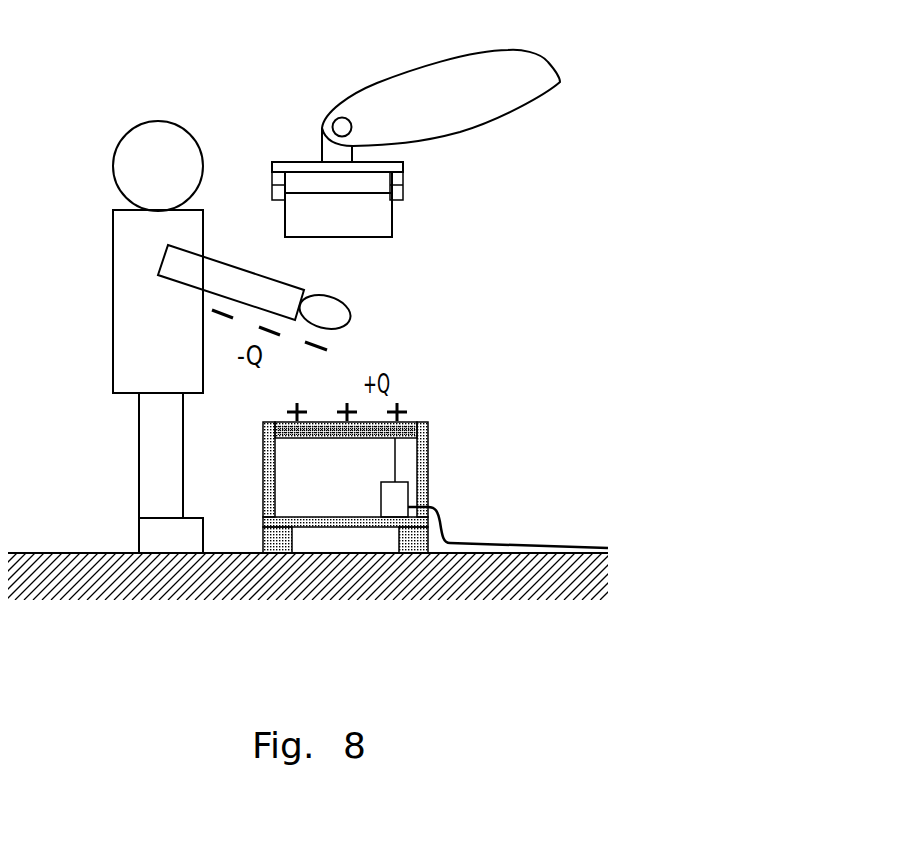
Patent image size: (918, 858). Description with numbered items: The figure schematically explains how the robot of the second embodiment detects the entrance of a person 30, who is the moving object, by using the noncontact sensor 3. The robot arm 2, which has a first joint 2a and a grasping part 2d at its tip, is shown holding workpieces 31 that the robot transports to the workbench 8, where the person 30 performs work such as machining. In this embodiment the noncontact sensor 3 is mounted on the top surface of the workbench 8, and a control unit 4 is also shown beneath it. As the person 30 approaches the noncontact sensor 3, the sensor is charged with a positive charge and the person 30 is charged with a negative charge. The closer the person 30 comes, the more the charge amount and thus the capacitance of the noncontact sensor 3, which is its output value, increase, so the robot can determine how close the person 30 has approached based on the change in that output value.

The person 30 is at (158, 120).
The robot arm 2 is at (443, 60).
The first joint 2a is at (337, 117).
The grasping part 2d is at (400, 165).
The workpieces 31 is at (393, 238).
The noncontact sensor 3 is at (430, 432).
The workbench 8 is at (262, 423).
The control unit 4 is at (407, 495).